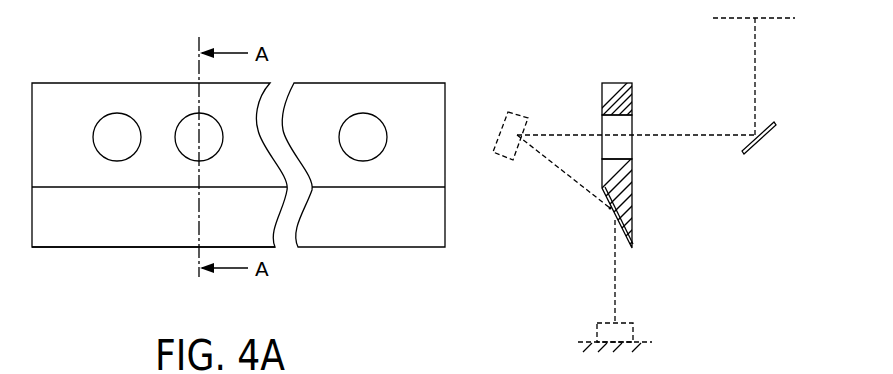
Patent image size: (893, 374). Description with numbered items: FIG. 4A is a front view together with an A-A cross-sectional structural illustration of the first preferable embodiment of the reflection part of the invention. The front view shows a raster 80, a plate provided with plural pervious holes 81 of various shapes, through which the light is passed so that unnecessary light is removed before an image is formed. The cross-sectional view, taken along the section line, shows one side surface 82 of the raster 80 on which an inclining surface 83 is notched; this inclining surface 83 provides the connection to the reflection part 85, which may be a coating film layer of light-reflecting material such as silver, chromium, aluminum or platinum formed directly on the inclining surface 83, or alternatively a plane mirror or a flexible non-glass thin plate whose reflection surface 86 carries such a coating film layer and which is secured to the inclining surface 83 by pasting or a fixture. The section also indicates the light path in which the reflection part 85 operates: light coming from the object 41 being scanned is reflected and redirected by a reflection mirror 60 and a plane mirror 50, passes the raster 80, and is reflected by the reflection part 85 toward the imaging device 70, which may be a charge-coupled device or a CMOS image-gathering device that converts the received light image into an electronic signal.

The raster 80 is at (62, 88).
The pervious holes 81 is at (117, 123).
The side surface 82 is at (603, 170).
The inclining surface 83 is at (633, 212).
The reflection part 85 is at (89, 258).
The reflection surface 86 is at (610, 208).
The reflection mirror 60 is at (503, 122).
The object being scanned 41 is at (740, 18).
The plane mirror 50 is at (757, 143).
The imaging device 70 is at (633, 323).